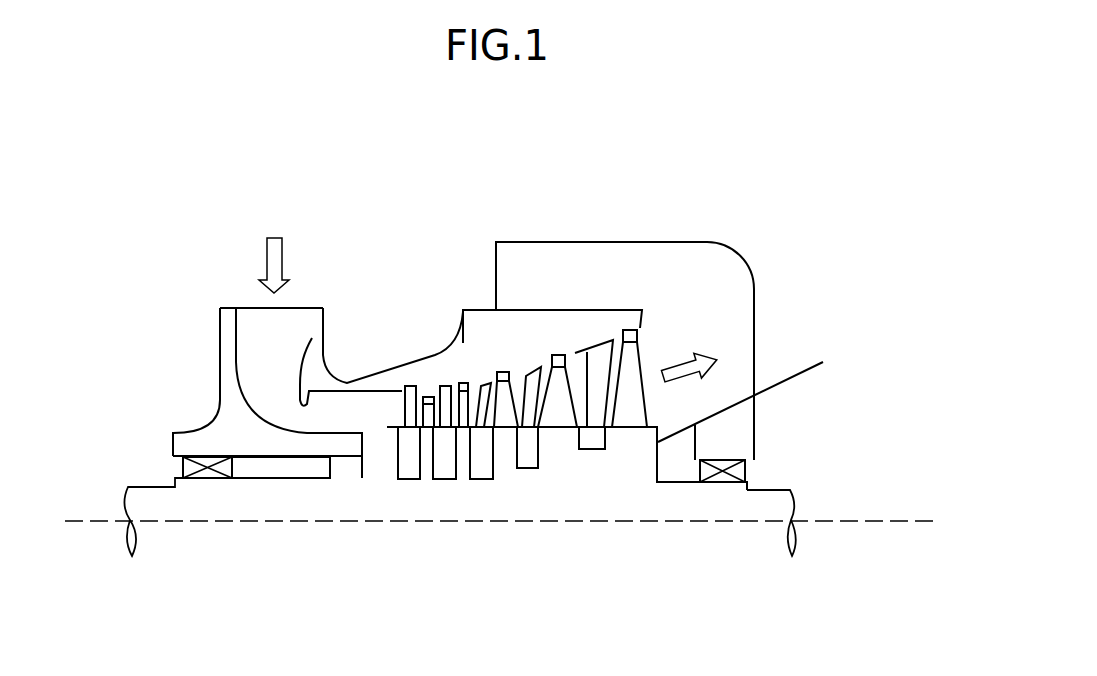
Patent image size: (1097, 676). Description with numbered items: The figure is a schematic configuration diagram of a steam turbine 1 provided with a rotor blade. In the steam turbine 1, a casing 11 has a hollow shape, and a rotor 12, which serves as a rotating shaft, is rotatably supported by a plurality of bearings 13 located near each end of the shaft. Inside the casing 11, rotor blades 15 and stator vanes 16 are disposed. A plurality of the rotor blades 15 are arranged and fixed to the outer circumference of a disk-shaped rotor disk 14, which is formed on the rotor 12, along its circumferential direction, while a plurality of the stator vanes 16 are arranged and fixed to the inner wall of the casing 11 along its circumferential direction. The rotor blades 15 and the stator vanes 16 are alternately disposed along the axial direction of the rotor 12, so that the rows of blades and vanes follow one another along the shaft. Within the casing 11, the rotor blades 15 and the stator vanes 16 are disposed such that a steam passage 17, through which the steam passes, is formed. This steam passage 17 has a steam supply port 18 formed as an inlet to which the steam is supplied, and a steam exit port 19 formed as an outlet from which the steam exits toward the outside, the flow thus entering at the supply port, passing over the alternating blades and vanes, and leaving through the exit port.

The steam turbine 1 is at (432, 235).
The casing 11 is at (230, 412).
The rotor 12 is at (432, 505).
The bearings 13 is at (207, 478).
The rotor disk 14 is at (427, 450).
The rotor blades 15 is at (432, 397).
The stator vanes 16 is at (411, 393).
The steam passage 17 is at (366, 400).
The steam supply port 18 is at (250, 318).
The steam exit port 19 is at (743, 348).